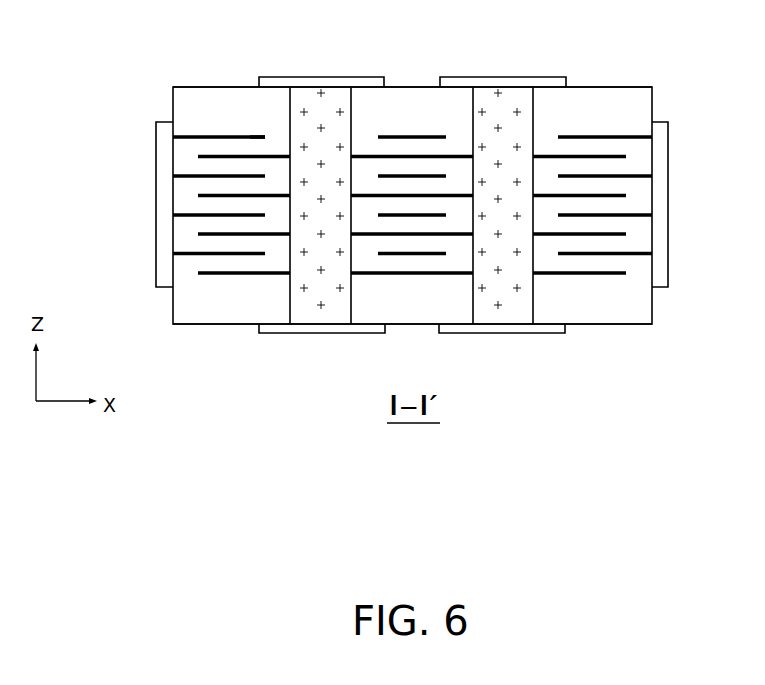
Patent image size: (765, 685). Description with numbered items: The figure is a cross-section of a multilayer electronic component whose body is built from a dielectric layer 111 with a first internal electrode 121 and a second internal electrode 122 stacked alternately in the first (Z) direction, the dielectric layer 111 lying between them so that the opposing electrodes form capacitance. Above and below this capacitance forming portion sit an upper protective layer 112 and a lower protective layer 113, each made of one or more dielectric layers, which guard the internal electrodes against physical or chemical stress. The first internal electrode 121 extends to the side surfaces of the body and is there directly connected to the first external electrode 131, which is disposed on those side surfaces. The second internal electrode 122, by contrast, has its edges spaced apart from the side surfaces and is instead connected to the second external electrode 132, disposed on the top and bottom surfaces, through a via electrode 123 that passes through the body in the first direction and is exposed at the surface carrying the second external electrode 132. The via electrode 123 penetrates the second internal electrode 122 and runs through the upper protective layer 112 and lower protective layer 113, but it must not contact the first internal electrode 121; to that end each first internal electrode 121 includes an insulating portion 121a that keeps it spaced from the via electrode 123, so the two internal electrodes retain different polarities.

The dielectric layer 111 is at (610, 147).
The upper protective layer 112 is at (600, 107).
The lower protective layer 113 is at (600, 305).
The first internal electrode 121 is at (217, 136).
The insulating portion 121a is at (279, 136).
The second internal electrode 122 is at (205, 155).
The via electrode 123 is at (333, 313).
The first external electrode 131 is at (162, 200).
The second external electrode 132 is at (325, 77).